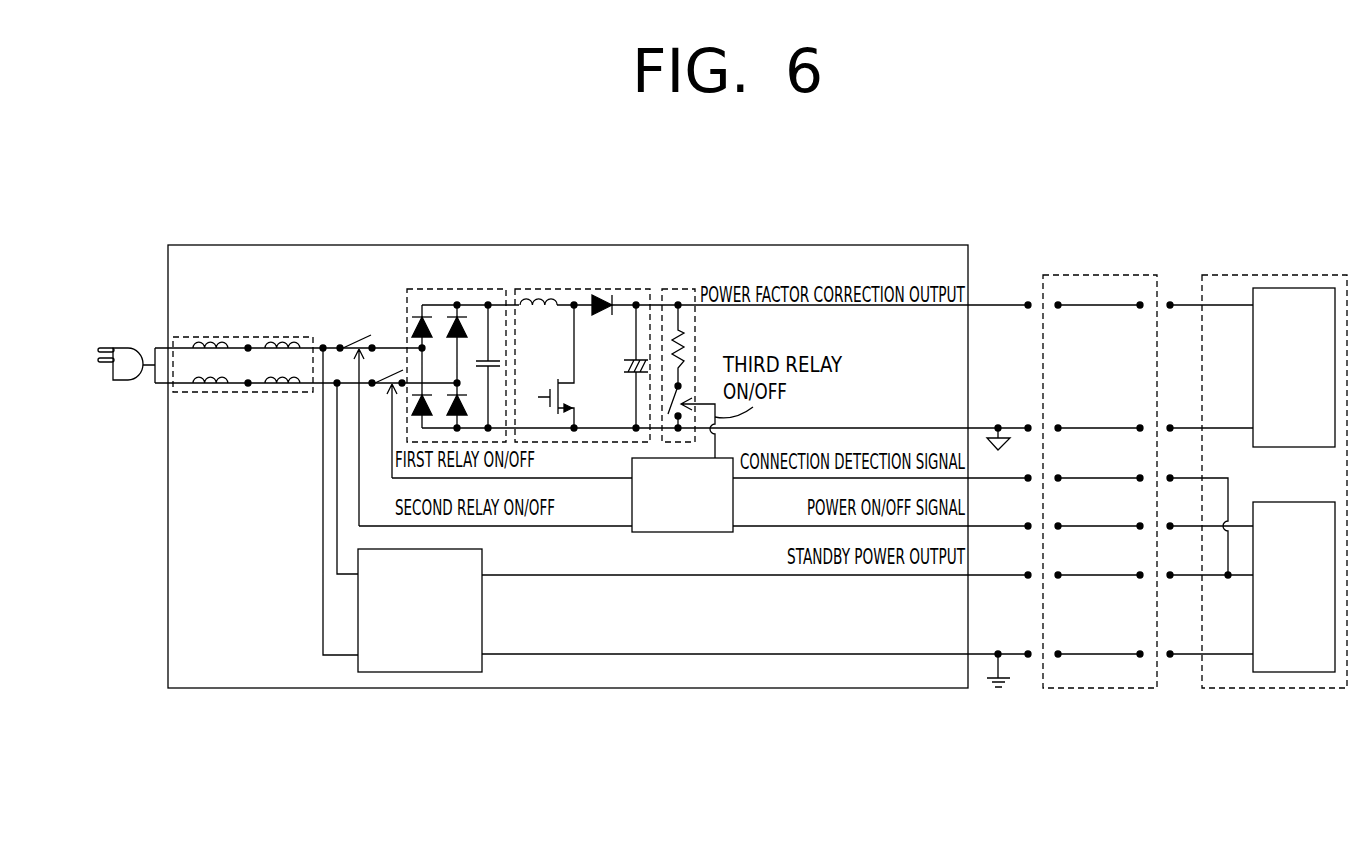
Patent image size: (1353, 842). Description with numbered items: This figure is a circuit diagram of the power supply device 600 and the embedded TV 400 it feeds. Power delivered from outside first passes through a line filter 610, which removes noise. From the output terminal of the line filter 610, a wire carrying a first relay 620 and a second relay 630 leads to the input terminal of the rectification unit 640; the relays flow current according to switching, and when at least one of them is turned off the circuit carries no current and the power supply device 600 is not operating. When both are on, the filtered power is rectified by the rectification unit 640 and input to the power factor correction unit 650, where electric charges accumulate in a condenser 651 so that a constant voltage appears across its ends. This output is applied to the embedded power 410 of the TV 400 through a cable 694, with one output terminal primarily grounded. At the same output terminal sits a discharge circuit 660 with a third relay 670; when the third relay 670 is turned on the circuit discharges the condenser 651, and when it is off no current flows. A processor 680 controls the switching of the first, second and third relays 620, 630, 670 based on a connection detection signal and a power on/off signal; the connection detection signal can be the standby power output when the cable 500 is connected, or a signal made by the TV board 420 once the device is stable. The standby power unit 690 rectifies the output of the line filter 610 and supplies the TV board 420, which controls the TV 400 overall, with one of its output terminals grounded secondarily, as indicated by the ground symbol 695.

The power supply device 600 is at (568, 450).
The line filter 610 is at (243, 335).
The first relay 620 is at (377, 390).
The second relay 630 is at (358, 335).
The rectification unit 640 is at (455, 287).
The power factor correction unit 650 is at (550, 287).
The condenser 651 is at (628, 360).
The discharge circuit 660 is at (682, 287).
The third relay 670 is at (687, 390).
The processor 680 is at (682, 533).
The standby power unit 690 is at (420, 673).
The cable 694 is at (998, 426).
The ground 695 is at (998, 695).
The cable 500 is at (1067, 273).
The embedded TV 400 is at (1222, 273).
The embedded power 410 is at (1290, 288).
The TV board 420 is at (1293, 673).